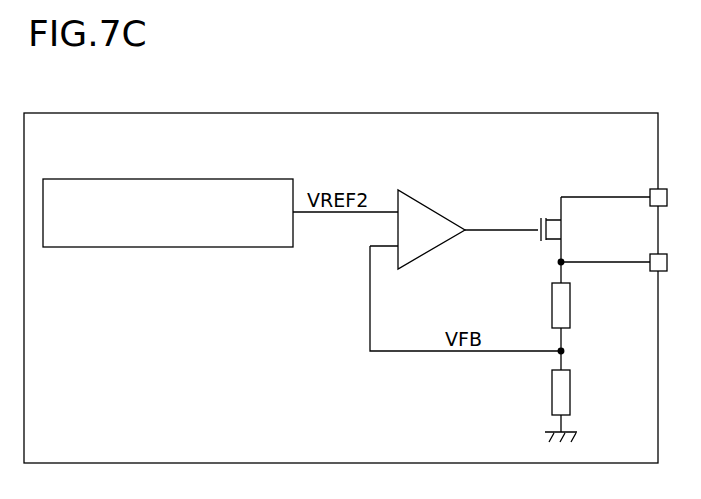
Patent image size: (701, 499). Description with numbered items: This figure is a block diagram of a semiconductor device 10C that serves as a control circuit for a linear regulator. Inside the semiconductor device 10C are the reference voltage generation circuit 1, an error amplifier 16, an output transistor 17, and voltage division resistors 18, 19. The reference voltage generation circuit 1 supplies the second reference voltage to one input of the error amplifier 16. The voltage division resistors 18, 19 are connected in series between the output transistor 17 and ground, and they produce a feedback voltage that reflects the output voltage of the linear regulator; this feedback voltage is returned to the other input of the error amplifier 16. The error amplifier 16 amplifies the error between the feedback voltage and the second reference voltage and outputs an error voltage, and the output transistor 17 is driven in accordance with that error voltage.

The semiconductor device 10C is at (392, 113).
The reference voltage generation circuit 1 is at (171, 178).
The error amplifier 16 is at (430, 202).
The output transistor 17 is at (572, 240).
The voltage division resistor 18 is at (580, 305).
The voltage division resistor 19 is at (580, 392).